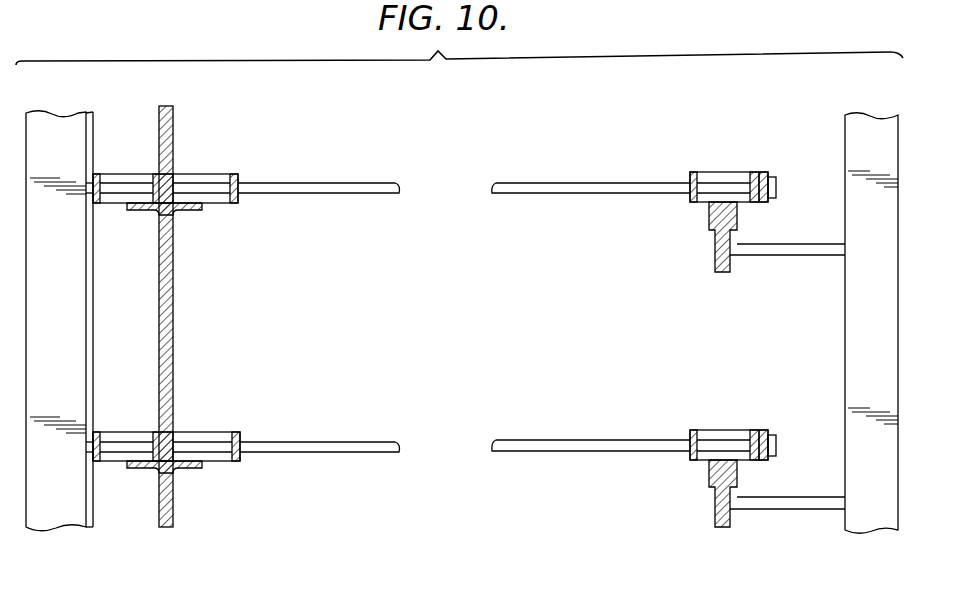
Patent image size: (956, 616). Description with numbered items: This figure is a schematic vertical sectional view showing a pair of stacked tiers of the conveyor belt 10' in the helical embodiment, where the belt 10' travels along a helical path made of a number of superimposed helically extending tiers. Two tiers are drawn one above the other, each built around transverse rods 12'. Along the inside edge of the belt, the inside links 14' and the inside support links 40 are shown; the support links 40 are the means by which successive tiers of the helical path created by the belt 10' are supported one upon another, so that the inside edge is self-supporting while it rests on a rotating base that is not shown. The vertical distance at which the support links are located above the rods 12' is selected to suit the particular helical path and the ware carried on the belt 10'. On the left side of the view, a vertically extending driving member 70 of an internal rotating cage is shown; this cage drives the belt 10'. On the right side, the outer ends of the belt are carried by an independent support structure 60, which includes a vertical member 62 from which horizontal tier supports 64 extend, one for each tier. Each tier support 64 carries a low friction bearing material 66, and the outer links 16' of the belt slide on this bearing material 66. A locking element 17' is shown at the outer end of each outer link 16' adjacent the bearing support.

The conveyor belt 10' is at (324, 106).
The rod 12' is at (591, 299).
The inside link 14' is at (173, 302).
The outer link 16' is at (722, 298).
The locking nut 17' is at (767, 298).
The inside support link 40 is at (186, 115).
The support structure 60 is at (695, 337).
The vertical member 62 is at (884, 337).
The horizontal tier support 64 is at (794, 243).
The low friction bearing material 66 is at (710, 219).
The driving member 70 is at (64, 288).